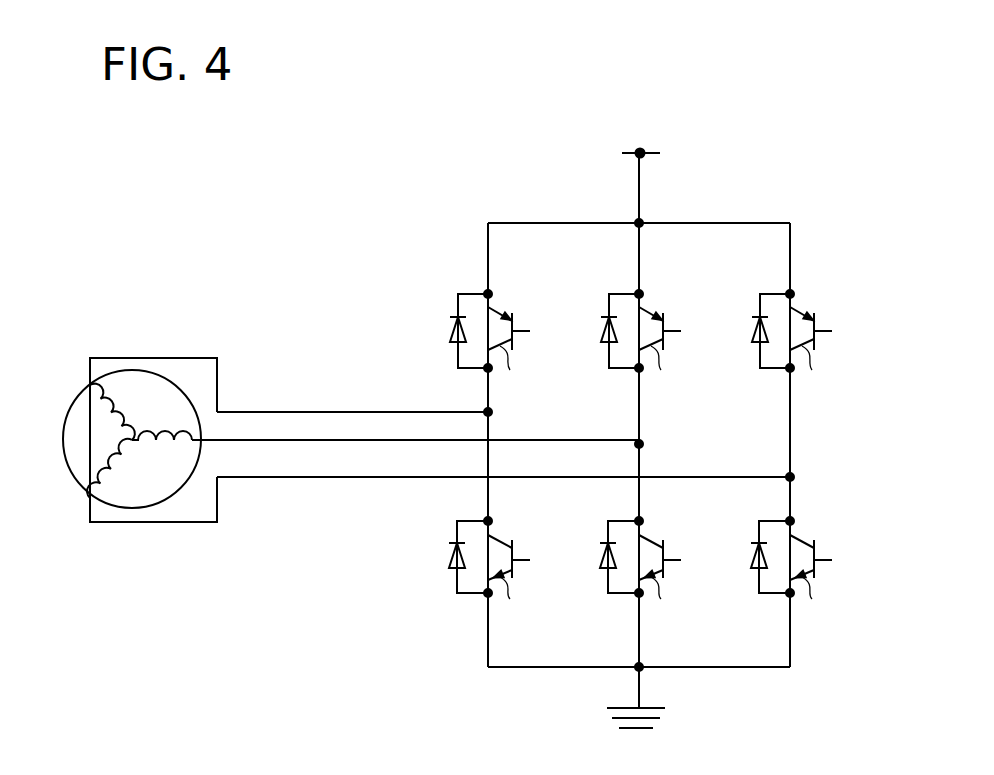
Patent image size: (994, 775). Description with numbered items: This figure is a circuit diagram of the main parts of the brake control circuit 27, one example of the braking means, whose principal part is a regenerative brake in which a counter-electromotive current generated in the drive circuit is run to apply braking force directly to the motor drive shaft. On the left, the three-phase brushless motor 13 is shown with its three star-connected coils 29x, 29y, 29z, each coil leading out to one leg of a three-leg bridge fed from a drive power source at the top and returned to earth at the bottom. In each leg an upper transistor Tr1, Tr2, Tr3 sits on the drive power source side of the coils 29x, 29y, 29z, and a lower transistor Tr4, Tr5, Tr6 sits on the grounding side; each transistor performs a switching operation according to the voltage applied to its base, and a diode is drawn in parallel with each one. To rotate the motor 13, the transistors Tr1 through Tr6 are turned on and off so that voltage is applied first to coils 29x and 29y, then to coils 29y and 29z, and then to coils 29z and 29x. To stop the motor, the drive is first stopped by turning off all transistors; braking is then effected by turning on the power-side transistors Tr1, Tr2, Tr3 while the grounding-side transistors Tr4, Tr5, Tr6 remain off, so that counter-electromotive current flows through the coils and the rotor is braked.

The brake control circuit 27 is at (516, 423).
The three-phase brushless motor 13 is at (127, 466).
The coil 29x is at (110, 419).
The coil 29y is at (105, 482).
The coil 29z is at (178, 433).
The transistor Tr1 is at (493, 347).
The transistor Tr2 is at (645, 348).
The transistor Tr3 is at (796, 348).
The transistor Tr4 is at (492, 575).
The transistor Tr5 is at (644, 575).
The transistor Tr6 is at (796, 575).